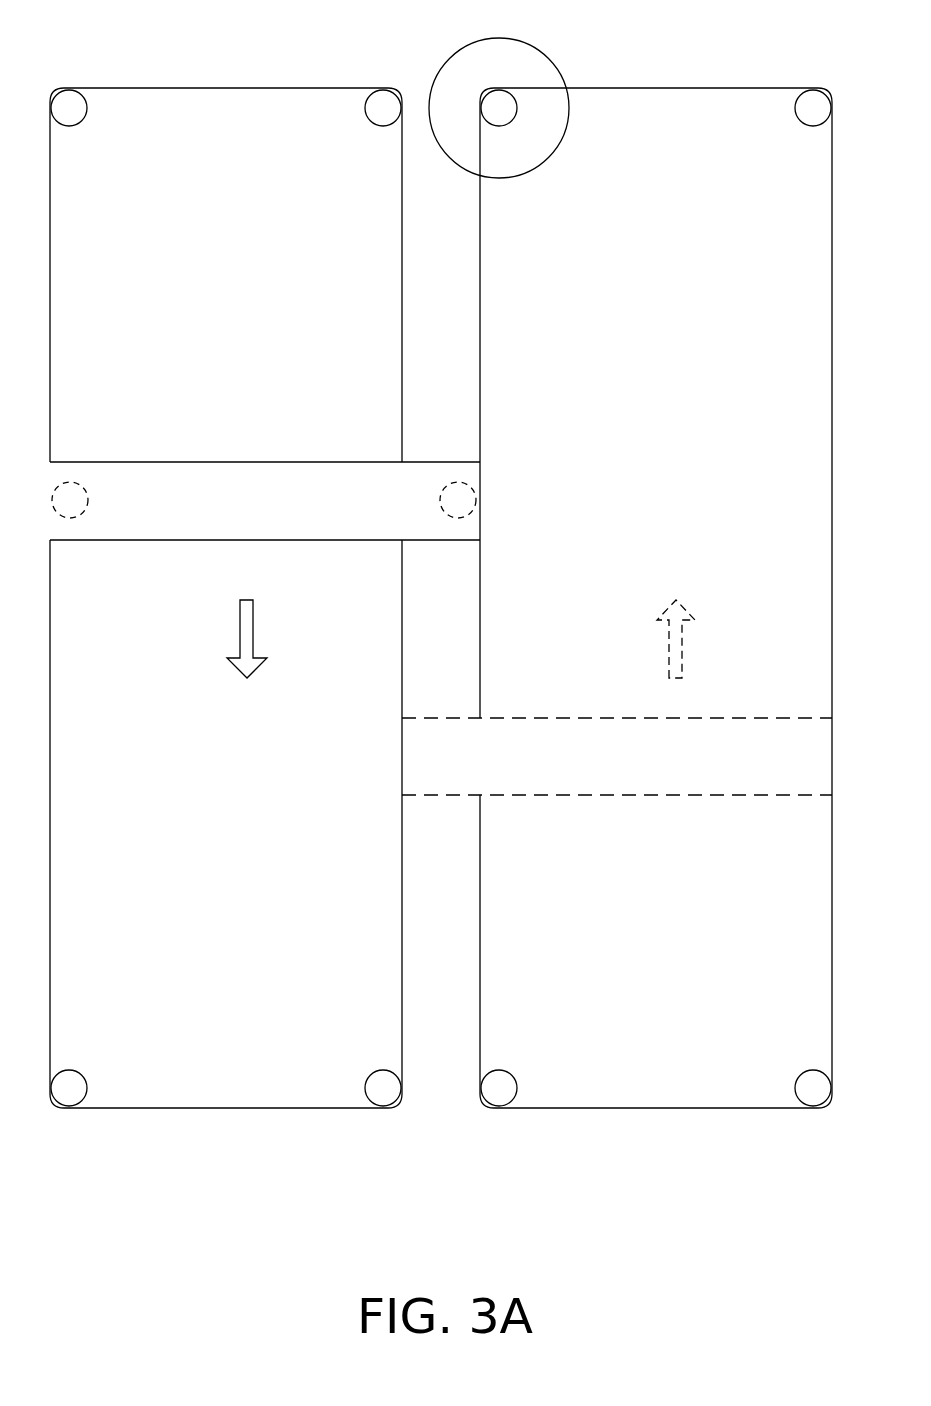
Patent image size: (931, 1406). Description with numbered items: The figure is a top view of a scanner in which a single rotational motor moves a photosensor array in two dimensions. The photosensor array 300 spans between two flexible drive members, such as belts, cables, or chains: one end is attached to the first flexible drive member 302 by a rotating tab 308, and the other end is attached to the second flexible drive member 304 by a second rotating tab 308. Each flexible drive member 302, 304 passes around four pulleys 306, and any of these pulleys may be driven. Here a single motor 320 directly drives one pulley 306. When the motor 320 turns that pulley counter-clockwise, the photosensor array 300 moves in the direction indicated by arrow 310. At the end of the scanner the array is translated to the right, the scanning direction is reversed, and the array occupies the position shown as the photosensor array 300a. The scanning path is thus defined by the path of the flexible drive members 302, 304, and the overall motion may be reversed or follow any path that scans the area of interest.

The photosensor array 300 is at (265, 501).
The photosensor array (repositioned) 300a is at (617, 697).
The first flexible drive member 302 is at (52, 276).
The second flexible drive member 304 is at (482, 276).
The pulley 306 is at (76, 126).
The rotating tab 308 is at (70, 482).
The arrow 310 is at (253, 622).
The motor 320 is at (498, 38).